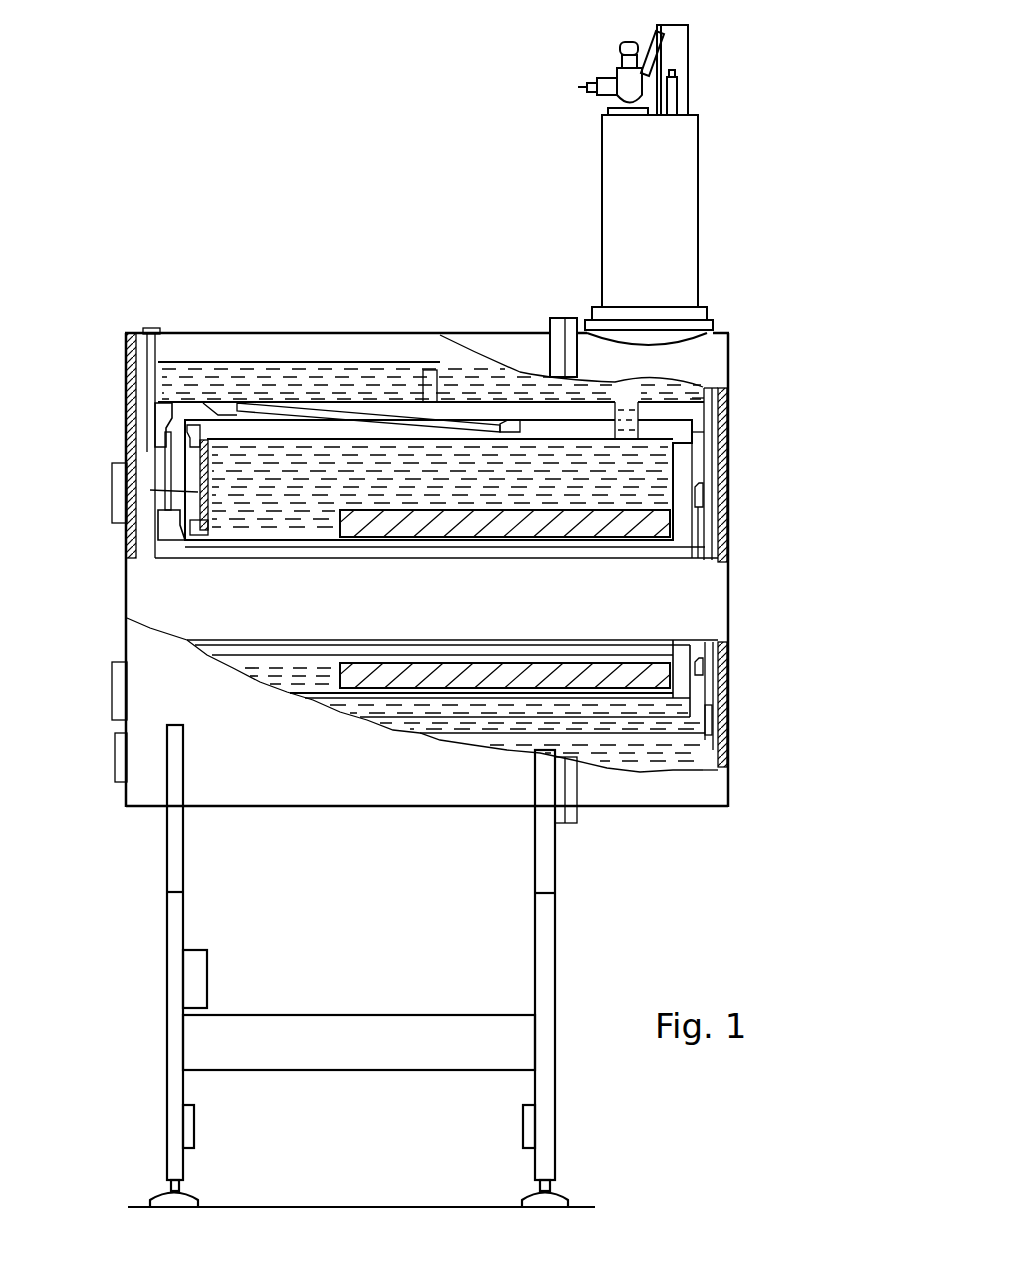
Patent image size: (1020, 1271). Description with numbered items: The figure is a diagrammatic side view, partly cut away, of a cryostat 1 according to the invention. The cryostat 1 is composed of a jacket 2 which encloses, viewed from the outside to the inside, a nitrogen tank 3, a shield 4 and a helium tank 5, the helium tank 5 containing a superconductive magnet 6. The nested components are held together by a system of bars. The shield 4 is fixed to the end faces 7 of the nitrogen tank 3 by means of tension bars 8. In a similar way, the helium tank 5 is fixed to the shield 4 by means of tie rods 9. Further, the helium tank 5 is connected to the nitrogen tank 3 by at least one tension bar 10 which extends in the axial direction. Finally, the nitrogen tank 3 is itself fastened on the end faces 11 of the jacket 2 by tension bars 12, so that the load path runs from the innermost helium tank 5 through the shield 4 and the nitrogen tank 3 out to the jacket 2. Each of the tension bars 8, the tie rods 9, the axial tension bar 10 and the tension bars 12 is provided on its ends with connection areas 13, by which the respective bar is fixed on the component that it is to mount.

The cryostat 1 is at (420, 609).
The jacket 2 is at (180, 333).
The nitrogen tank 3 is at (268, 378).
The shield 4 is at (547, 423).
The helium tank 5 is at (247, 510).
The superconductive magnet 6 is at (627, 533).
The end faces of the nitrogen tank 7 is at (147, 467).
The tension bars 8 is at (168, 504).
The tie rods 9 is at (150, 490).
The tension bar 10 is at (460, 422).
The end faces of the jacket 11 is at (723, 665).
The tension bars 12 is at (708, 720).
The connection areas 13 is at (700, 493).